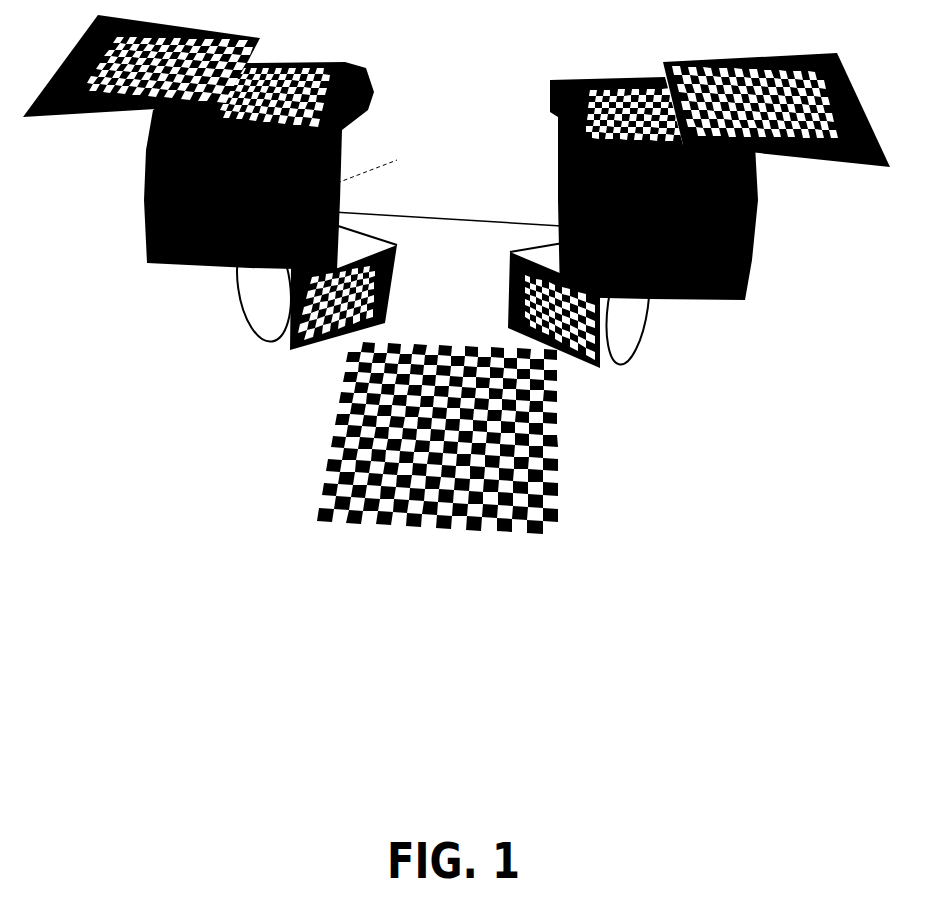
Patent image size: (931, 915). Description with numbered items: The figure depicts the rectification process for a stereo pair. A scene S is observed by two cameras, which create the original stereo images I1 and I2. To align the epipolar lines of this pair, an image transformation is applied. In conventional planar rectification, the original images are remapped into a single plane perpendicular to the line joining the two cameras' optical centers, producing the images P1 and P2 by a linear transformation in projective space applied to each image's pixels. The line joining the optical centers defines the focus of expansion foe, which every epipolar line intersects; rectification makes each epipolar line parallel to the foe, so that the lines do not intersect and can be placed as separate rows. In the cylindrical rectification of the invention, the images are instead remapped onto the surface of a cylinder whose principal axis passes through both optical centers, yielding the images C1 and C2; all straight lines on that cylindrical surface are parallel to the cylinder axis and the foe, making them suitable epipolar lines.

The planar rectified image P1 is at (141, 66).
The cylindrically rectified image C1 is at (248, 203).
The stereo image I1 is at (331, 324).
The focus of expansion foe is at (480, 205).
The cylindrically rectified image C2 is at (658, 222).
The planar rectified image P2 is at (777, 100).
The stereo image I2 is at (573, 334).
The scene S is at (452, 438).